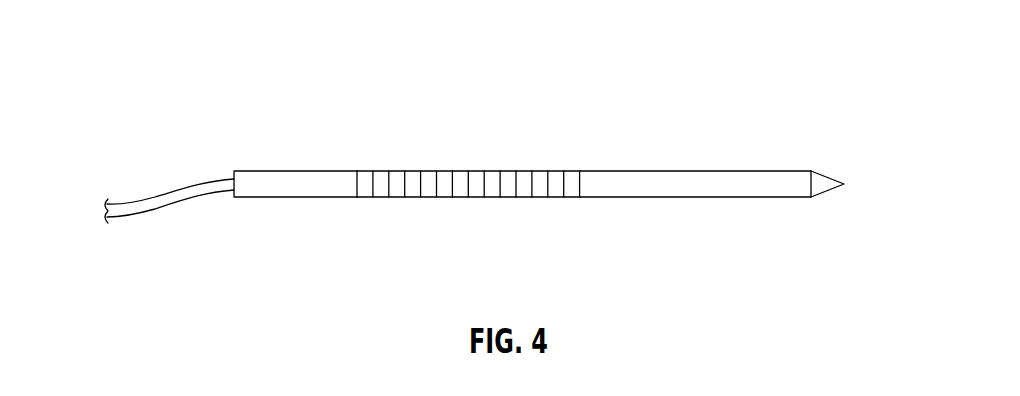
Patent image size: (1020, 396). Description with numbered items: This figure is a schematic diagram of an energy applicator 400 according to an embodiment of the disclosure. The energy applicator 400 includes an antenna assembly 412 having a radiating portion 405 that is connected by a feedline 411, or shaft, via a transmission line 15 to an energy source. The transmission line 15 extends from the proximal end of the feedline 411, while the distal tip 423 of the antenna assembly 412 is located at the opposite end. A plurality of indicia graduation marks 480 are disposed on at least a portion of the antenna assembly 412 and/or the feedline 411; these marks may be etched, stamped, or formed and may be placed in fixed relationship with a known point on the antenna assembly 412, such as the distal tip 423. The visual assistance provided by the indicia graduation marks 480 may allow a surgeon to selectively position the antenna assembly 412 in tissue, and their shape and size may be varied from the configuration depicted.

The energy applicator 400 is at (645, 48).
The transmission line 15 is at (185, 184).
The antenna assembly 412 is at (695, 140).
The feedline 411 is at (369, 215).
The indicia graduation marks 480 is at (512, 167).
The radiating portion 405 is at (730, 215).
The distal tip 423 is at (847, 183).